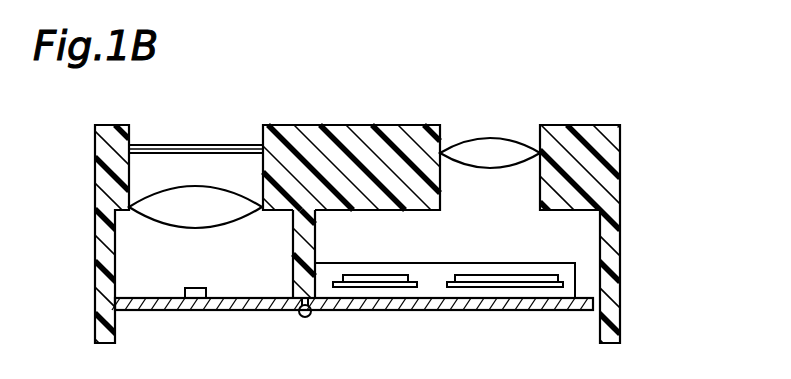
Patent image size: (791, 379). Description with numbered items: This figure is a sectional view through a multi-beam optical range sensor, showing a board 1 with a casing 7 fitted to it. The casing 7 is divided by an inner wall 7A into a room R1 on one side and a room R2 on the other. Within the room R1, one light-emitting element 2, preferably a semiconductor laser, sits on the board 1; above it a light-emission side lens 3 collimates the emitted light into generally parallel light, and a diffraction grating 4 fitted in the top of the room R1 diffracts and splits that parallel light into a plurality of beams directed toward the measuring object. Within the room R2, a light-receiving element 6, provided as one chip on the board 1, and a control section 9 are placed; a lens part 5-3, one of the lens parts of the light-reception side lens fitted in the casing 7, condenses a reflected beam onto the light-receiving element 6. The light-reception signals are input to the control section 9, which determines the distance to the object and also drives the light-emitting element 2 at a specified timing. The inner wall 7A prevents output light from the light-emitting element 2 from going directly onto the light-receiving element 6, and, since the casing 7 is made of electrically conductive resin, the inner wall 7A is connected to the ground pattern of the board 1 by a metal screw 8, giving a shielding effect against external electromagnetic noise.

The board 1 is at (522, 312).
The light-emitting element 2 is at (178, 285).
The light-emission side lens 3 is at (165, 190).
The diffraction grating 4 is at (200, 141).
The lens part 5-3 is at (470, 134).
The light-receiving element 6 is at (560, 278).
The casing 7 is at (623, 152).
The inner wall 7A is at (295, 257).
The metal screw 8 is at (305, 318).
The control section 9 is at (368, 277).
The room R1 is at (140, 237).
The room R2 is at (572, 235).